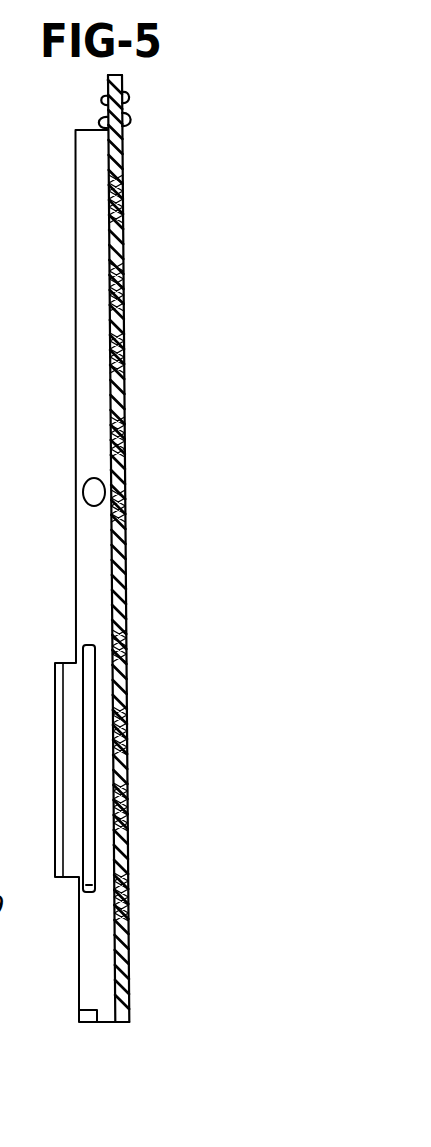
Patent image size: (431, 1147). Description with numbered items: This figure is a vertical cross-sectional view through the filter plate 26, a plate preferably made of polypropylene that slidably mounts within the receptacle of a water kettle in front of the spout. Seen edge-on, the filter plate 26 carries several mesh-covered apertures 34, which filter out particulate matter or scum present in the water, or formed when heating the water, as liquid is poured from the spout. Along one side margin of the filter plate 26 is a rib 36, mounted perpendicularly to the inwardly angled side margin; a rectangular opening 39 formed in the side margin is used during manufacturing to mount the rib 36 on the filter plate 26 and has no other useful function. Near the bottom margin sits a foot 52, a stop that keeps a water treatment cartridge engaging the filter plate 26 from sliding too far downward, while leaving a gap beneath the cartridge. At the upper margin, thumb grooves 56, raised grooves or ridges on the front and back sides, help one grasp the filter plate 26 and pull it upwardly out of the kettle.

The filter plate 26 is at (124, 174).
The mesh-covered apertures 34 is at (167, 283).
The ribs 36 is at (66, 777).
The rectangular openings 39 is at (92, 894).
The feet 52 is at (86, 1014).
The thumb grooves 56 is at (127, 120).